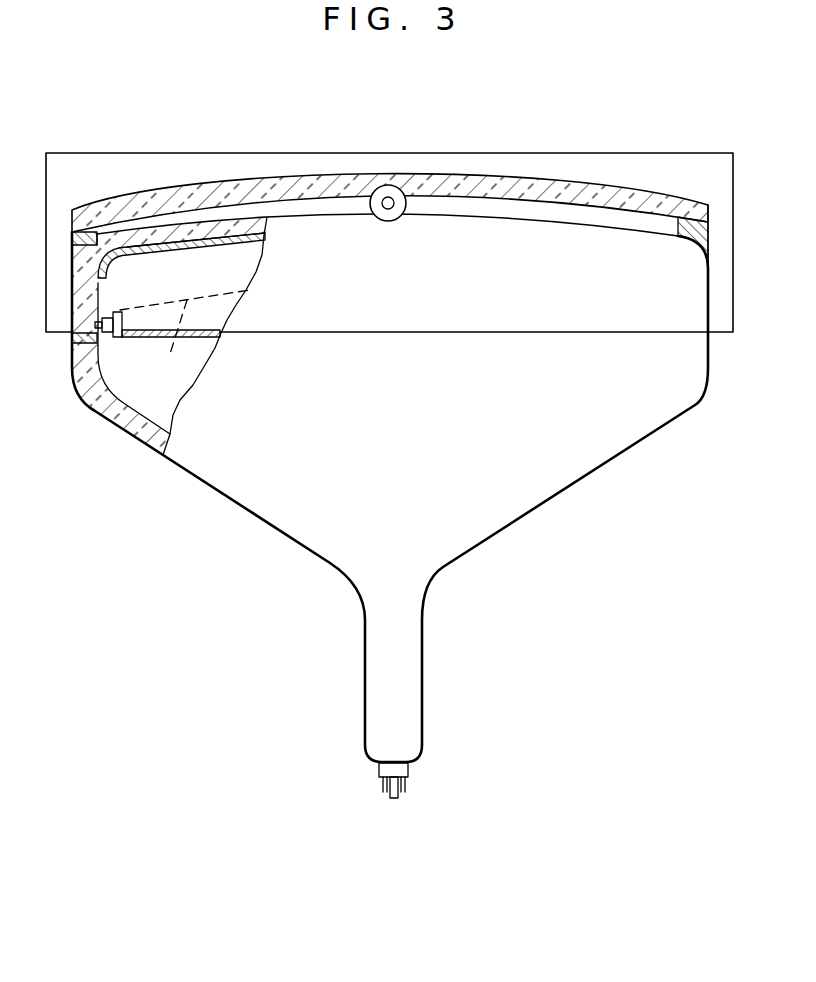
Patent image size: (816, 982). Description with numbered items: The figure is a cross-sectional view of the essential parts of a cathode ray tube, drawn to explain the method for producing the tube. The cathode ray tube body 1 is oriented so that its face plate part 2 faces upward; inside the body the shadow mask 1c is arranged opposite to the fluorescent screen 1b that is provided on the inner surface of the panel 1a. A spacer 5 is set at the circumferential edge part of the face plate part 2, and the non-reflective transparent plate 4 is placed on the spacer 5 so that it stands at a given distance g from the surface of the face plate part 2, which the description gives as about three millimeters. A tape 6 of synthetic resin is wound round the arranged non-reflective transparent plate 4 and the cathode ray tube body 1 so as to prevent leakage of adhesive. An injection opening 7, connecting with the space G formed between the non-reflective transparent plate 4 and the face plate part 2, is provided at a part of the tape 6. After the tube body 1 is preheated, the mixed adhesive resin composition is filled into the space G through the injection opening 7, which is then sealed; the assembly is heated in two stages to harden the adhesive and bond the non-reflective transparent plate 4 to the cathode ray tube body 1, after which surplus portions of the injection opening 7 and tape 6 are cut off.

The cathode ray tube body 1 is at (575, 457).
The panel 1a is at (108, 243).
The fluorescent screen 1b is at (183, 256).
The shadow mask 1c is at (171, 356).
The face plate part 2 is at (547, 217).
The non-reflective transparent plate 4 is at (232, 190).
The spacer 5 is at (695, 233).
The tape 6 is at (717, 183).
The injection opening 7 is at (388, 197).
The space G is at (463, 207).
The distance g is at (125, 250).